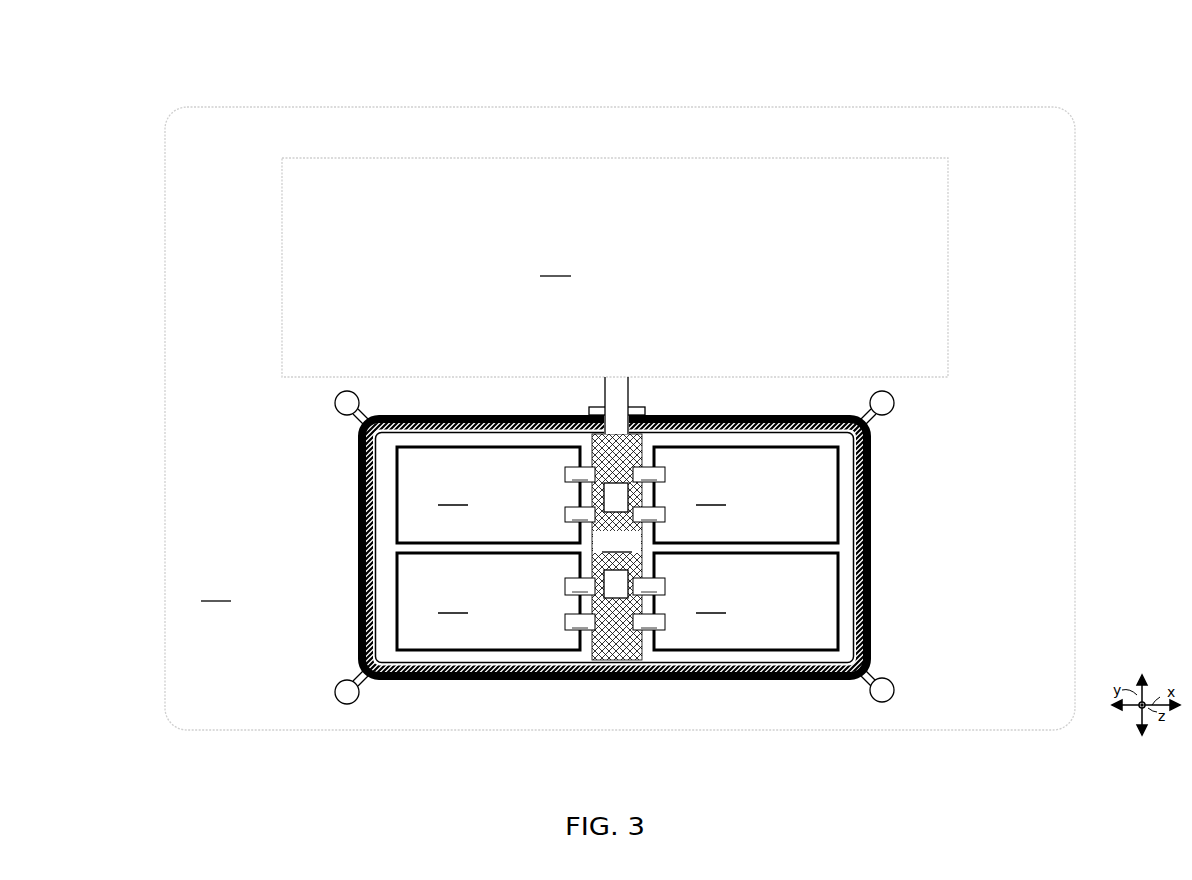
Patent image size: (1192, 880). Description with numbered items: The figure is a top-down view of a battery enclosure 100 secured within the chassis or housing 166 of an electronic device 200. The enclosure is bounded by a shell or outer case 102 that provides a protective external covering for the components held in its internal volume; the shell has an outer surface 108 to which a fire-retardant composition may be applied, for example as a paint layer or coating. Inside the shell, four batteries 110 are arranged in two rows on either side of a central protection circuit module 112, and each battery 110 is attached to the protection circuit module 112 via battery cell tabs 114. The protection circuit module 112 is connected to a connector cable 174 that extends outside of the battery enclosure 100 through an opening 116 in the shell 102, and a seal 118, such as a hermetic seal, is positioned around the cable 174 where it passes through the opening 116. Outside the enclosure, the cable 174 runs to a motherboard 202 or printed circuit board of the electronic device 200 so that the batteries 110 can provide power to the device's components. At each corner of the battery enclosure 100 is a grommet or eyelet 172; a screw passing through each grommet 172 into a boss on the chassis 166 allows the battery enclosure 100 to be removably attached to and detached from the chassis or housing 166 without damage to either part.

The electronic device 200 is at (948, 52).
The chassis or housing 166 is at (620, 418).
The motherboard 202 is at (615, 267).
The battery enclosure 100 is at (885, 513).
The shell or outer case 102 is at (360, 492).
The outer surface of the shell 108 is at (870, 640).
The battery 110 is at (617, 548).
The protection circuit module 112 is at (617, 547).
The battery cell tab 114 is at (615, 548).
The opening 116 is at (638, 396).
The seal 118 is at (589, 407).
The grommet or eyelet 172 is at (345, 694).
The connector cable 174 is at (618, 395).